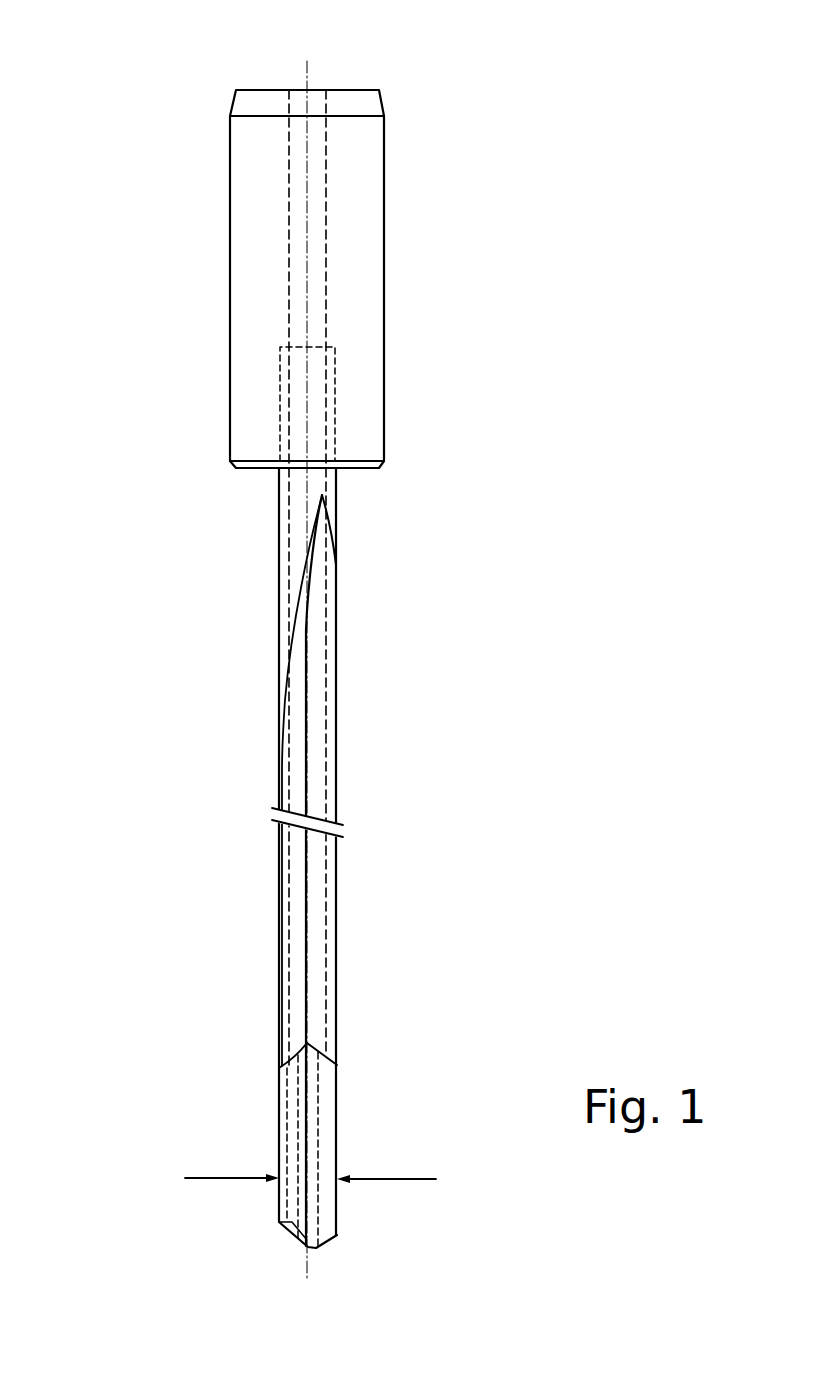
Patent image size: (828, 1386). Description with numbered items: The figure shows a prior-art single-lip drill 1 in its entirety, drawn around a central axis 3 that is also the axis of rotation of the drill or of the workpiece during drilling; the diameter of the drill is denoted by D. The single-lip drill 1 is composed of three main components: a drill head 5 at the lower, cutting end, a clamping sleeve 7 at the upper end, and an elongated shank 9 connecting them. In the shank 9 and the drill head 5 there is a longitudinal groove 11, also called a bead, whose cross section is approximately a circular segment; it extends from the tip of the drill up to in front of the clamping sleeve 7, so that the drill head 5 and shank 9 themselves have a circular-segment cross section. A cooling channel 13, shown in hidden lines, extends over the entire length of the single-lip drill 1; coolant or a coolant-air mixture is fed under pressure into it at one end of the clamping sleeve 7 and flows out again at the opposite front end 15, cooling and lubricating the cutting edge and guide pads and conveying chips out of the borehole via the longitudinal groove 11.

The single-lip drill 1 is at (522, 309).
The central axis 3 is at (307, 78).
The drill head 5 is at (210, 1137).
The clamping sleeve 7 is at (253, 430).
The shank 9 is at (182, 858).
The longitudinal groove 11 is at (315, 750).
The cooling channel 13 is at (326, 248).
The front end 15 is at (281, 1249).